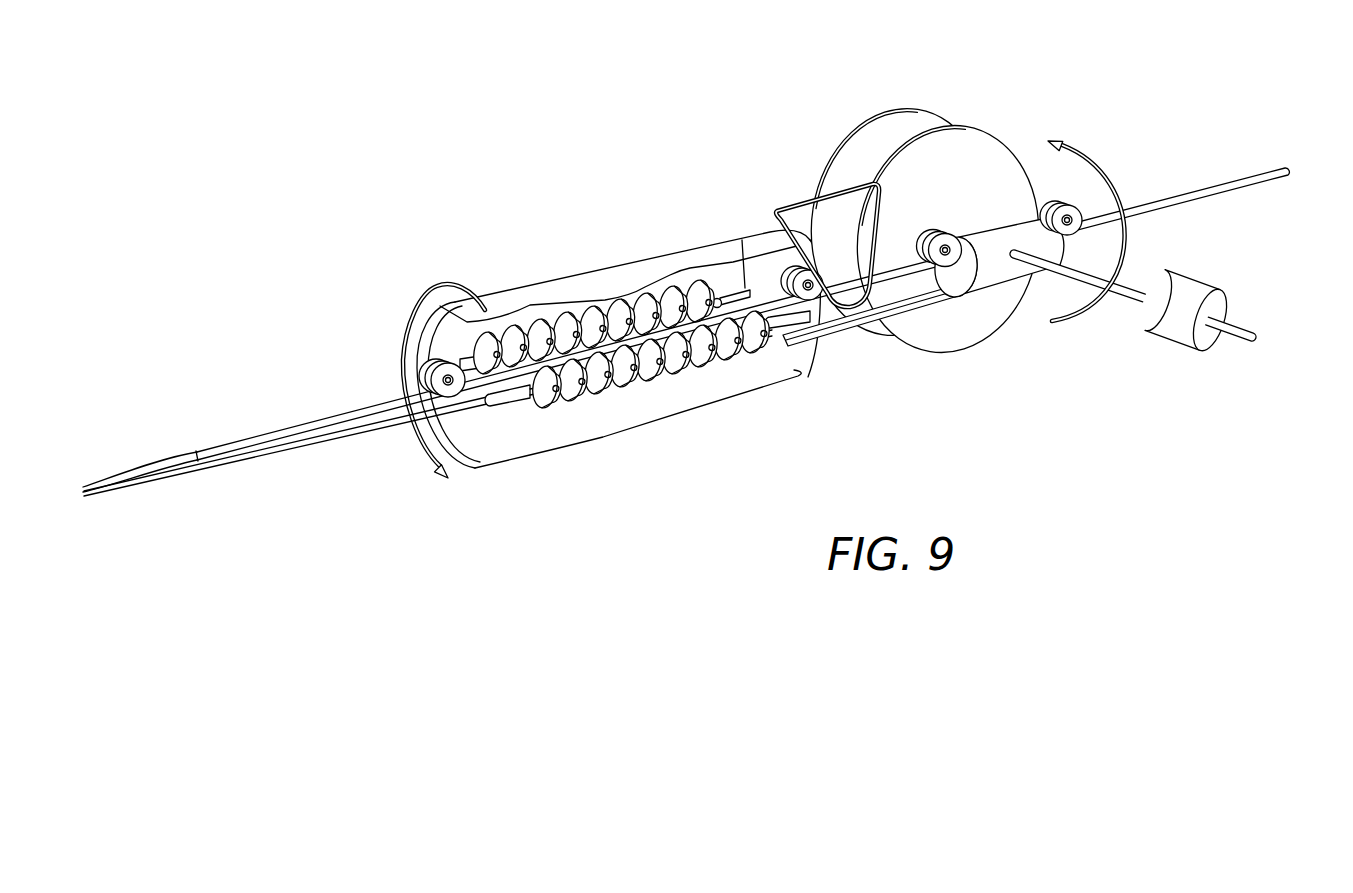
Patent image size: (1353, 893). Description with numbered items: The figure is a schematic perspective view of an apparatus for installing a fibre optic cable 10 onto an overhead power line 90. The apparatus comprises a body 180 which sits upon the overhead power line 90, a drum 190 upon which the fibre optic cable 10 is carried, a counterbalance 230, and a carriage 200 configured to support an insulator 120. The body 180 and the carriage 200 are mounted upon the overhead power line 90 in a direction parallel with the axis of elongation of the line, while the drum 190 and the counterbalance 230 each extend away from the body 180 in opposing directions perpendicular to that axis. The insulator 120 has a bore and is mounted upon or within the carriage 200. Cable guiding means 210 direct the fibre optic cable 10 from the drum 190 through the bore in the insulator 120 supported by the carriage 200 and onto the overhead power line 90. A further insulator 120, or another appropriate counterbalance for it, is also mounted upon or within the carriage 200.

The fibre optic cable 10 is at (768, 203).
The overhead power line 90 is at (1250, 198).
The insulator 120 is at (675, 278).
The body 180 is at (1034, 292).
The drum 190 is at (990, 115).
The carriage 200 is at (610, 438).
The cable guiding means 210 is at (848, 348).
The counterbalance 230 is at (1219, 354).